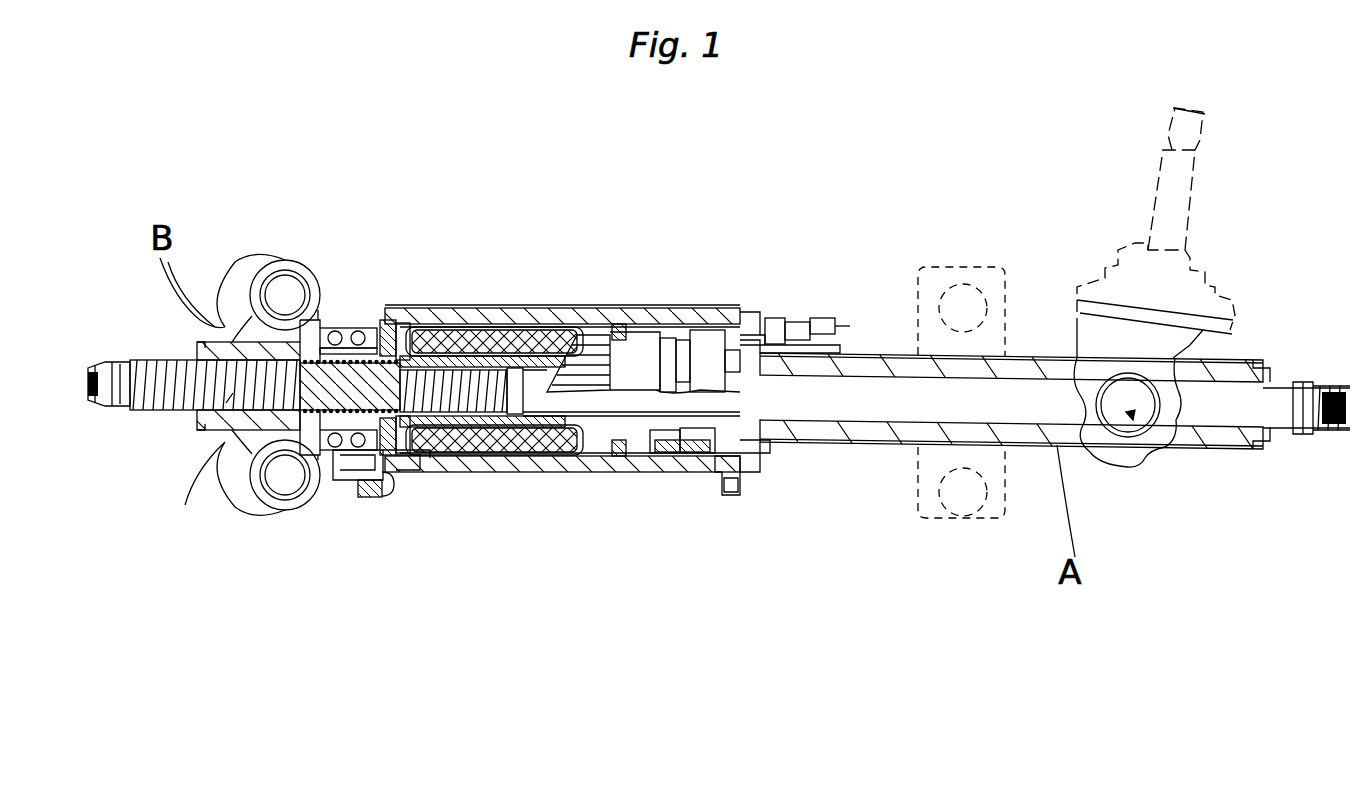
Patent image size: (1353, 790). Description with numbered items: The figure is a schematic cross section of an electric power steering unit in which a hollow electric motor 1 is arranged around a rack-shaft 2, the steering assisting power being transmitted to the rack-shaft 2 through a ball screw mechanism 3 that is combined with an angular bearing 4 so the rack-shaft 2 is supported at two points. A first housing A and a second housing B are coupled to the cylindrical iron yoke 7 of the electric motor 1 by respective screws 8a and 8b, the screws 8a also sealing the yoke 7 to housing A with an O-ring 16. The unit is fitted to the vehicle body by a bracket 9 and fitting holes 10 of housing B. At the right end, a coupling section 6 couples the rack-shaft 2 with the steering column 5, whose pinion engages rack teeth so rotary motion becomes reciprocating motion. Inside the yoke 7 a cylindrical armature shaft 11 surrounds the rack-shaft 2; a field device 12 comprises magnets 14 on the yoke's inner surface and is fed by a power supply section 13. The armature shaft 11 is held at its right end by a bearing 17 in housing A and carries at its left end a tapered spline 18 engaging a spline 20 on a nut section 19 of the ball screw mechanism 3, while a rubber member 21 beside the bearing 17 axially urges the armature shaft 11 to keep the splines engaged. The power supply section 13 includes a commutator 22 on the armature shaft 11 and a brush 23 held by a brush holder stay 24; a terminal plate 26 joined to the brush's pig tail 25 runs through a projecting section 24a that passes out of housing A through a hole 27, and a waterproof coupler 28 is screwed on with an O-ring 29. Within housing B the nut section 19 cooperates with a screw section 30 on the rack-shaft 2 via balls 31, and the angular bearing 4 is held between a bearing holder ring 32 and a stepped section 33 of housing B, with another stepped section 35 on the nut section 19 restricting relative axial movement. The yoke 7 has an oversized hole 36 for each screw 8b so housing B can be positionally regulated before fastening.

The electric motor 1 is at (470, 308).
The rack-shaft 2 is at (898, 403).
The ball screw mechanism 3 is at (350, 455).
The angular bearing 4 is at (340, 328).
The steering column 5 is at (1167, 187).
The coupling section 6 is at (1150, 470).
The yoke 7 is at (600, 470).
The screws 8a is at (722, 487).
The screws 8b is at (395, 462).
The bracket 9 is at (963, 267).
The fitting holes 10 is at (280, 290).
The armature shaft 11 is at (570, 458).
The field device 12 is at (528, 332).
The power supply section 13 is at (678, 460).
The magnets 14 is at (533, 456).
The O-ring 16 is at (715, 470).
The bearing 17 is at (745, 452).
The tapered spline 18 is at (395, 328).
The nut section 19 is at (337, 452).
The spline 20 is at (407, 327).
The rubber member 21 is at (805, 460).
The commutator 22 is at (638, 317).
The brush 23 is at (658, 460).
The brush holder stay 24 is at (747, 317).
The projecting section 24a is at (770, 317).
The pig tail 25 is at (373, 327).
The terminal plate 26 is at (697, 337).
The hole 27 is at (793, 310).
The coupler 28 is at (832, 318).
The O-ring 29 is at (827, 317).
The screw section 30 is at (218, 452).
The balls 31 is at (365, 472).
The bearing holder ring 32 is at (413, 460).
The stepped section 33 is at (330, 468).
The stepped section 35 is at (317, 310).
The hole 36 is at (390, 497).